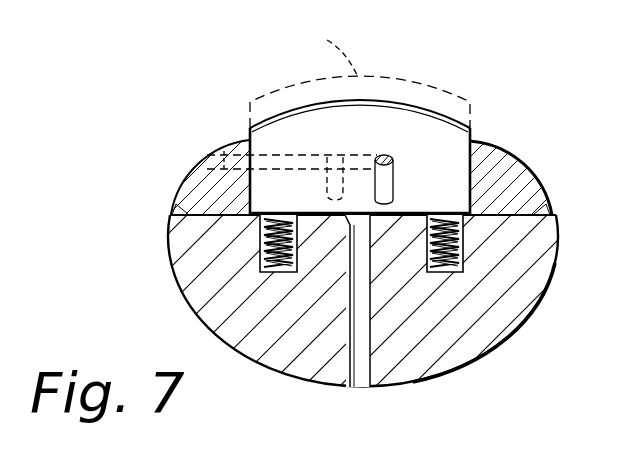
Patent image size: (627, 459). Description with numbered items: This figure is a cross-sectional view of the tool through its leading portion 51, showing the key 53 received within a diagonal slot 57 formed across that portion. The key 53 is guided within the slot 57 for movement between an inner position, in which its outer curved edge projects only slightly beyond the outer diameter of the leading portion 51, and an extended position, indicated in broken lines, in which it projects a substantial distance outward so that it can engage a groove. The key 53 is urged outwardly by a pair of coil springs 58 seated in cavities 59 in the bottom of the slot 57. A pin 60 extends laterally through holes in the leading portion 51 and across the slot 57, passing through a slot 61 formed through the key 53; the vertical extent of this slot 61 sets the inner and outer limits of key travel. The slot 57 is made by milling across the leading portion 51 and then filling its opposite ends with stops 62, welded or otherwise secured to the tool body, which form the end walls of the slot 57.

The leading portion 51 is at (542, 309).
The key 53 is at (317, 105).
The diagonal slot 57 is at (315, 212).
The coil springs 58 is at (262, 250).
The cavities 59 is at (454, 272).
The pin 60 is at (395, 158).
The slot 61 is at (392, 177).
The stops 62 is at (190, 188).